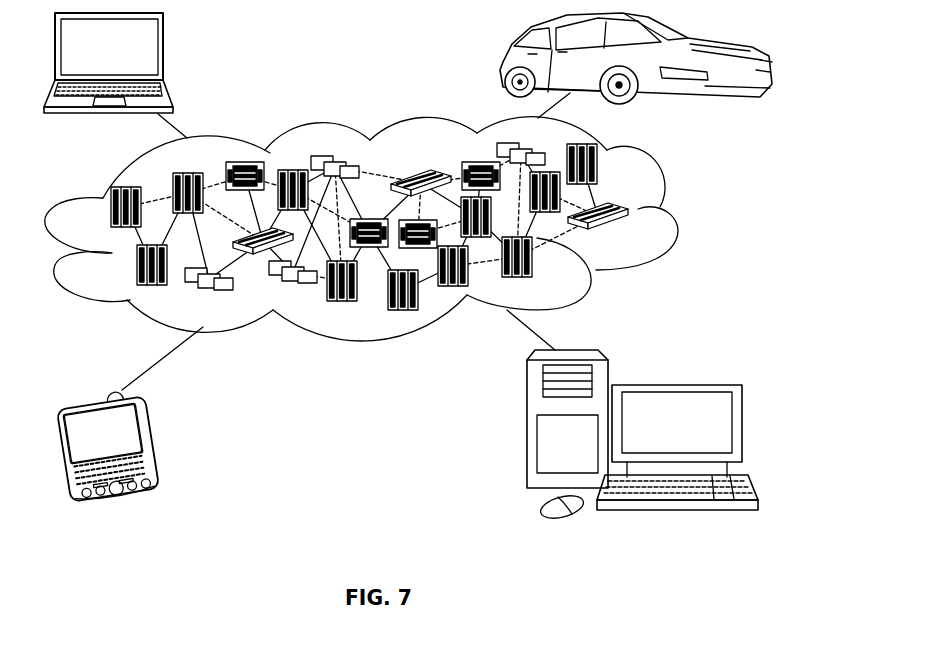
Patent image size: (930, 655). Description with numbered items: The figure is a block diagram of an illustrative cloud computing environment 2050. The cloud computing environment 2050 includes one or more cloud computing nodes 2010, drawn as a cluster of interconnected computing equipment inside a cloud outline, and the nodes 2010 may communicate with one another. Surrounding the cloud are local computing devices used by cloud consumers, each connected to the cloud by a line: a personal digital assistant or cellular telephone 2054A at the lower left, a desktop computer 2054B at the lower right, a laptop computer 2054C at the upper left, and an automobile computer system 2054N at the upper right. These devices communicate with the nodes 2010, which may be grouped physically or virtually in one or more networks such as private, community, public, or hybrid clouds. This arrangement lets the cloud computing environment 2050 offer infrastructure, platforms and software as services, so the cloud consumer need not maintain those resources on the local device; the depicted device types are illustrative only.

The laptop computer 2054C is at (163, 50).
The automobile computer system 2054N is at (503, 62).
The personal digital assistant (PDA) or cellular telephone 2054A is at (152, 441).
The desktop computer 2054B is at (683, 373).
The cloud computing environment 2050 is at (670, 216).
The cloud computing nodes 2010 is at (638, 236).